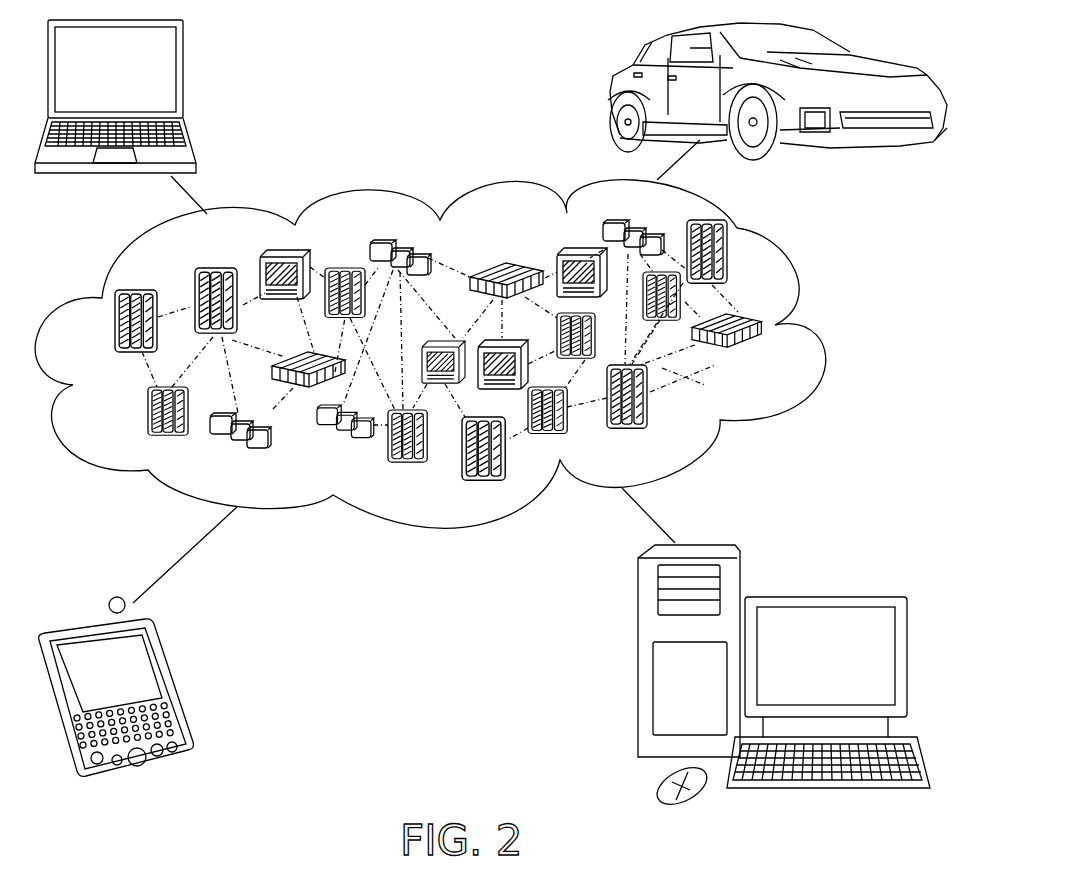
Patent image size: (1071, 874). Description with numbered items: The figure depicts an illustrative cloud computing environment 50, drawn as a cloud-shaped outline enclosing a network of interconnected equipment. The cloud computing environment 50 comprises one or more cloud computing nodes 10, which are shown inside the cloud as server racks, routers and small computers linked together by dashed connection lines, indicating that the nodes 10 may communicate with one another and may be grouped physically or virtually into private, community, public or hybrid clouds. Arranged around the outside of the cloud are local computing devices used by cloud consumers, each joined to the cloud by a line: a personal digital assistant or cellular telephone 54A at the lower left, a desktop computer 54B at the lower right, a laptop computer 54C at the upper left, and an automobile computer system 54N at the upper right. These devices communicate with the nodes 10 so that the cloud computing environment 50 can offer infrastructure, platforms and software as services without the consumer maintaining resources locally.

The cloud computing node 10 is at (767, 360).
The cloud computing environment 50 is at (818, 328).
The personal digital assistant or cellular telephone 54A is at (173, 687).
The desktop computer 54B is at (822, 596).
The laptop computer 54C is at (183, 78).
The automobile computer system 54N is at (608, 92).